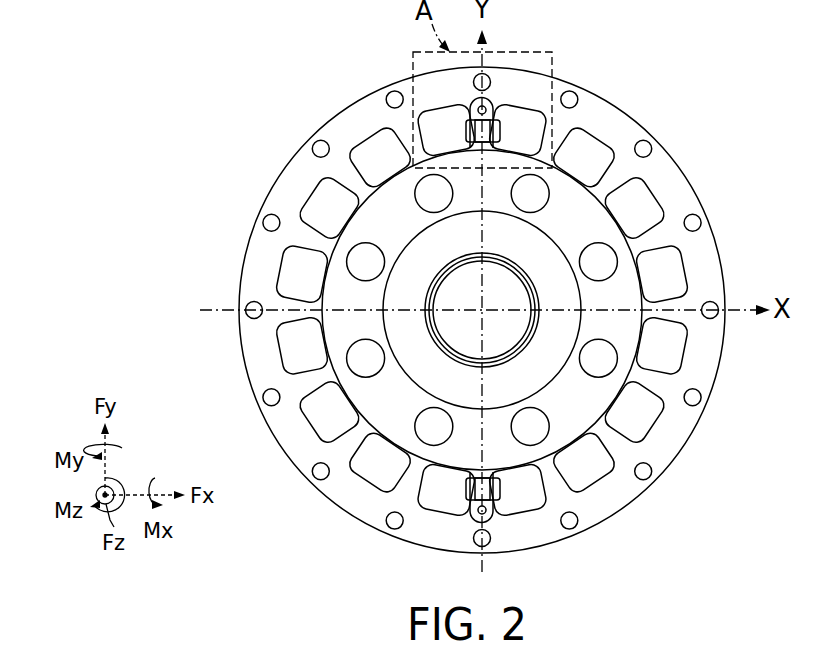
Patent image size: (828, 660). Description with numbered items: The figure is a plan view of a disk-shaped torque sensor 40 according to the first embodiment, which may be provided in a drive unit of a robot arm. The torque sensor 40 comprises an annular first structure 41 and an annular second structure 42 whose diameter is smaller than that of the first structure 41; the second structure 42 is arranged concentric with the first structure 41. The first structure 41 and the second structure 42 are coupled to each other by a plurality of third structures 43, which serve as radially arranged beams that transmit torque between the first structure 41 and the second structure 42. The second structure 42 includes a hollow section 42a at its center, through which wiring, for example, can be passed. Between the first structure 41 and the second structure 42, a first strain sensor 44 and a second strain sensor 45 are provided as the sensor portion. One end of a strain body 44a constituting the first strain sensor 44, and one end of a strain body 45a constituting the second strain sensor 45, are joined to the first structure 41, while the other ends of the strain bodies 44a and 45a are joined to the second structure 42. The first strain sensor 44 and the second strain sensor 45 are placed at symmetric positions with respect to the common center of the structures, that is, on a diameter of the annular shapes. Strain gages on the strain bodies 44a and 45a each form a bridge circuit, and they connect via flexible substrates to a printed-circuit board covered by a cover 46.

The torque sensor 40 is at (514, 41).
The first structure 41 is at (290, 168).
The second structure 42 is at (340, 280).
The hollow section 42a is at (500, 321).
The third structures 43 is at (307, 382).
The first strain sensor 44 is at (465, 112).
The strain body 44a is at (499, 128).
The second strain sensor 45 is at (458, 489).
The strain body 45a is at (497, 490).
The cover 46 is at (548, 276).